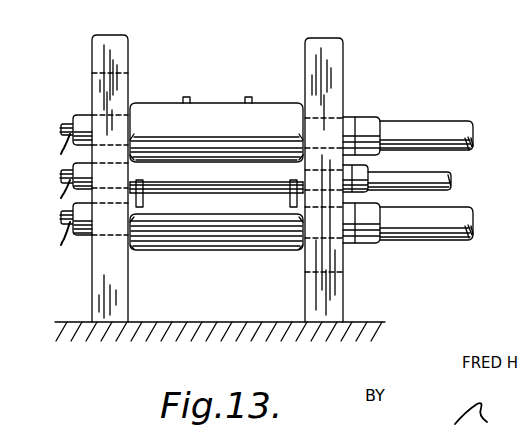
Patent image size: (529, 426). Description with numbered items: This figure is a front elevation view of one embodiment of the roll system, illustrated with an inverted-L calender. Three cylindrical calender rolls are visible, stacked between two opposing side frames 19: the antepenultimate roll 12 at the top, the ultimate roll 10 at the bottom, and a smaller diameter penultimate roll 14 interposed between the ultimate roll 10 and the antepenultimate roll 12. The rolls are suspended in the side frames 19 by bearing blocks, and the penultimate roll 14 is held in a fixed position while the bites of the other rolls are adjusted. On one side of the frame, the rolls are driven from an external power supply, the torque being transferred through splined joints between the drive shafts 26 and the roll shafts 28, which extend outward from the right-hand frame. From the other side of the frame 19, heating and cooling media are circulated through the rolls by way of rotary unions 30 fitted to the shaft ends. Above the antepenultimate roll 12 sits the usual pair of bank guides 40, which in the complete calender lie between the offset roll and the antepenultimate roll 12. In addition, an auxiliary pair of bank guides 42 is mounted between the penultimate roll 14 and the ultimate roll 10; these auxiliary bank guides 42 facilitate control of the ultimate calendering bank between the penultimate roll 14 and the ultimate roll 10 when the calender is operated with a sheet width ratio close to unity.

The ultimate roll 10 is at (212, 236).
The antepenultimate roll 12 is at (150, 110).
The penultimate roll 14 is at (197, 176).
The side frames 19 is at (104, 46).
The drive shafts 26 is at (460, 216).
The roll shafts 28 is at (356, 153).
The rotary unions 30 is at (62, 233).
The bank guides 40 is at (247, 97).
The auxiliary bank guides 42 is at (143, 203).